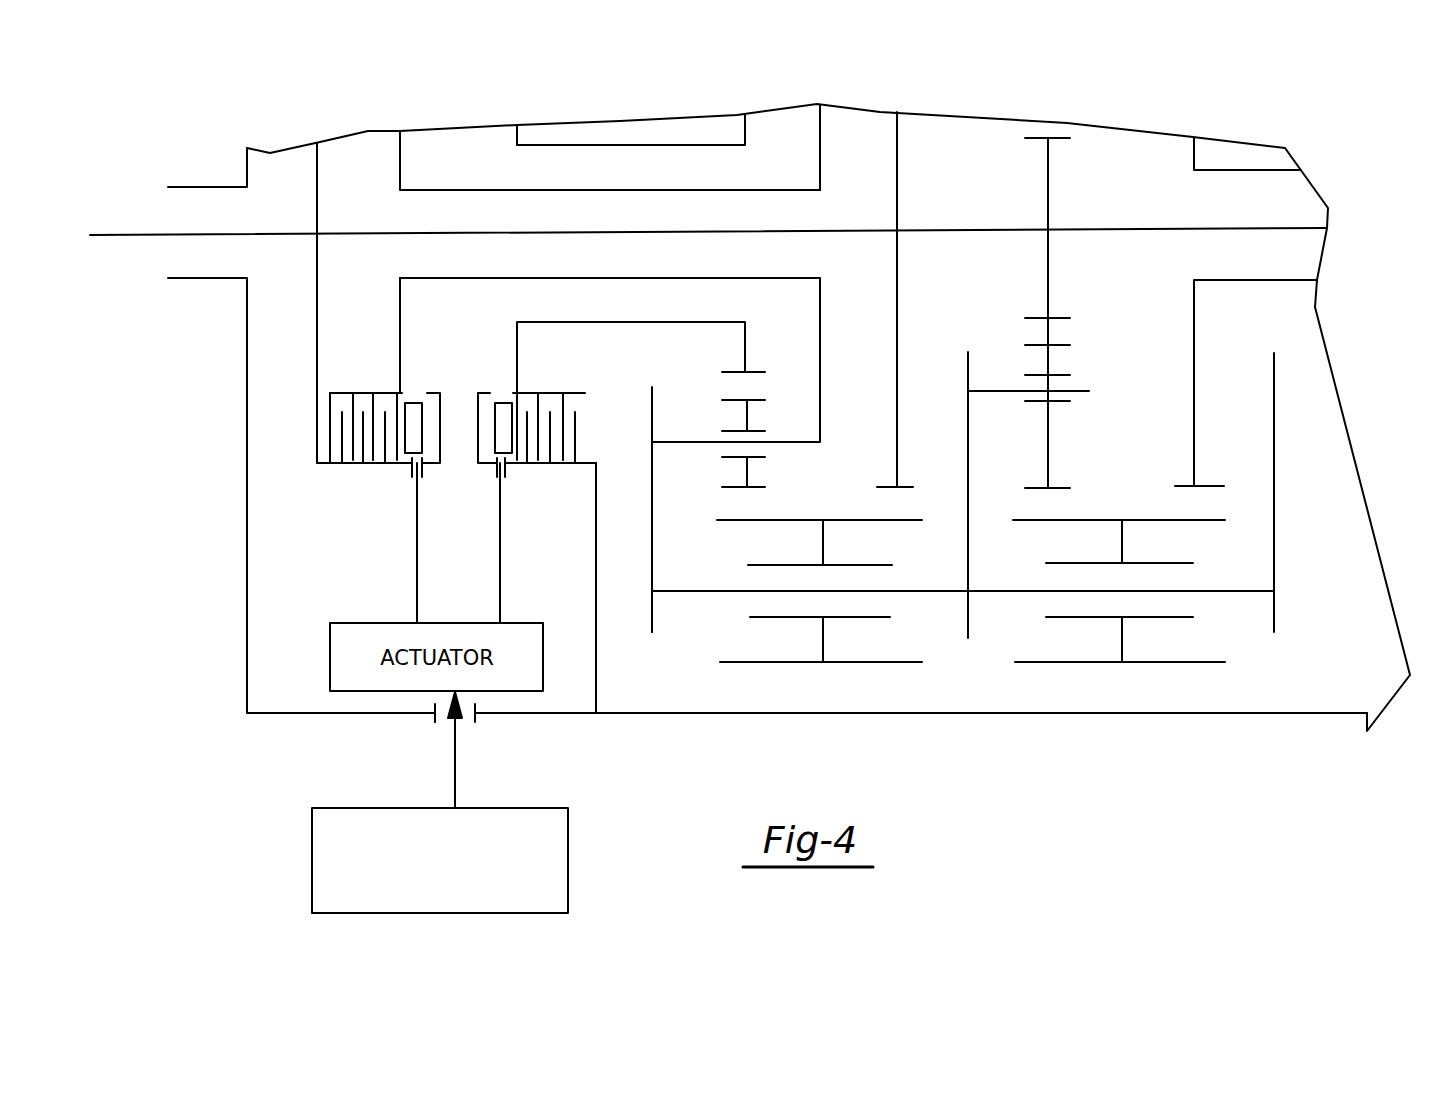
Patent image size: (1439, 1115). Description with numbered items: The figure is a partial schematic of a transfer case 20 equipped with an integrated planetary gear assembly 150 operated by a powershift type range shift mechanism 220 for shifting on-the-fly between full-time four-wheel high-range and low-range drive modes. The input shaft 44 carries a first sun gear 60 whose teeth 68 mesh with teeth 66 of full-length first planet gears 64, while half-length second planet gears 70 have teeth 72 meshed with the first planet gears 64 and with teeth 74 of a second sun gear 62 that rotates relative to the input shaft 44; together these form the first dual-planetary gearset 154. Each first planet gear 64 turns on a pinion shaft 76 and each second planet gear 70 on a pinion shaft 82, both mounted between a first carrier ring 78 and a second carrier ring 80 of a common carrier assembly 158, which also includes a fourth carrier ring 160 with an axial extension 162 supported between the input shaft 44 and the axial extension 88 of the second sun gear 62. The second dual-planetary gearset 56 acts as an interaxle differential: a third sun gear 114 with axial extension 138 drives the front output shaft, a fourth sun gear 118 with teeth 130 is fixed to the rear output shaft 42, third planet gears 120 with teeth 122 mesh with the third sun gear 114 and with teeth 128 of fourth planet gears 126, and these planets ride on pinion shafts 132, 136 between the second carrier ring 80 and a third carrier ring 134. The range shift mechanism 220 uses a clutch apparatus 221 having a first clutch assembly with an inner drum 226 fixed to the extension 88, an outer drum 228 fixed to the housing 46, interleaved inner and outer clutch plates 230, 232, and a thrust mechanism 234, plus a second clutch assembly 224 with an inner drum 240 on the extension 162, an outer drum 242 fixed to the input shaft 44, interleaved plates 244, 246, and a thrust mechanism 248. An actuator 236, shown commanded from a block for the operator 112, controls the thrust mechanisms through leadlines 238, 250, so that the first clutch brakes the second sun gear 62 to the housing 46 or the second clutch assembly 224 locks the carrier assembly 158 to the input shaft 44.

The transfer case 20 is at (1312, 167).
The rear output shaft 42 is at (1330, 210).
The input shaft 44 is at (213, 235).
The housing 46 is at (368, 750).
The second dual-planetary gearset 56 is at (1258, 641).
The first sun gear 60 is at (897, 170).
The second sun gear 62 is at (745, 130).
The first planet gears 64 is at (823, 640).
The teeth 66 is at (865, 663).
The teeth 68 is at (893, 488).
The second planet gears 70 is at (748, 418).
The teeth 72 is at (738, 488).
The teeth 74 is at (750, 374).
The pinion shaft 76 is at (680, 592).
The first carrier ring 78 is at (652, 592).
The second carrier ring 80 is at (968, 636).
The pinion shaft 82 is at (694, 441).
The axial extension 88 is at (652, 148).
The operator 112 is at (568, 828).
The third sun gear 114 is at (1197, 365).
The fourth sun gear 118 is at (1048, 187).
The third planet gears 120 is at (1123, 645).
The teeth 122 is at (1113, 520).
The fourth planet gears 126 is at (1052, 375).
The teeth 128 is at (1060, 345).
The teeth 130 is at (1060, 137).
The pinion shaft 132 is at (1115, 641).
The third carrier ring 134 is at (1274, 439).
The pinion shaft 136 is at (985, 392).
The axial extension 138 is at (1232, 170).
The integrated planetary gear assembly 150 is at (938, 658).
The first dual-planetary gearset 154 is at (703, 652).
The carrier assembly 158 is at (1276, 520).
The fourth carrier ring 160 is at (820, 152).
The axial extension 162 is at (522, 193).
The range shift mechanism 220 is at (268, 741).
The clutch apparatus 221 is at (201, 630).
The second clutch assembly 224 is at (207, 431).
The inner drum 226 is at (517, 365).
The outer drum 228 is at (575, 463).
The inner clutch plates 230 is at (565, 398).
The outer clutch plates 232 is at (526, 465).
The thrust mechanism 234 is at (497, 437).
The actuator 236 is at (315, 742).
The leadline 238 is at (502, 598).
The inner drum 240 is at (357, 392).
The outer drum 242 is at (375, 463).
The inner clutch plates 244 is at (333, 435).
The outer clutch plates 246 is at (341, 455).
The thrust mechanism 248 is at (421, 430).
The leadline 250 is at (417, 555).